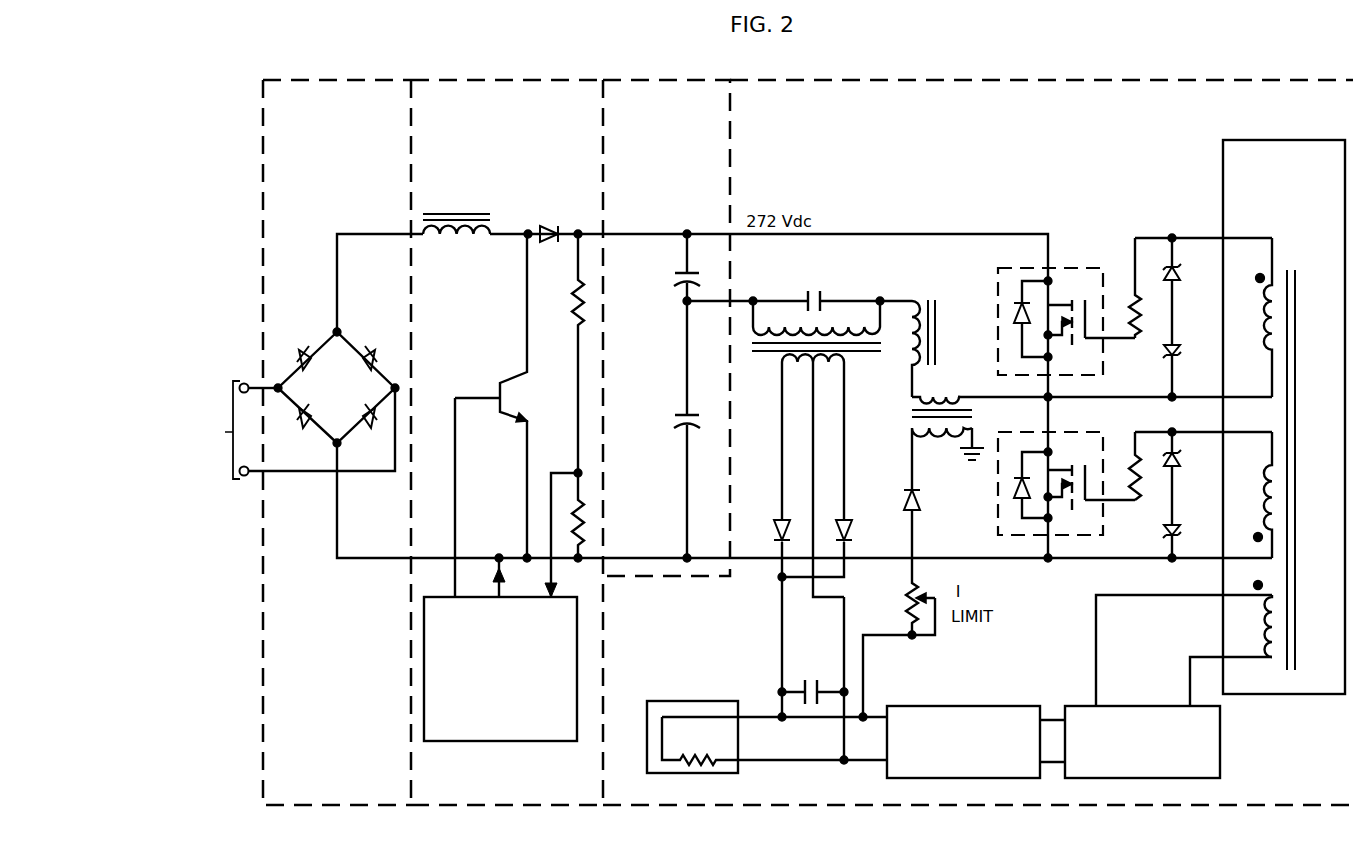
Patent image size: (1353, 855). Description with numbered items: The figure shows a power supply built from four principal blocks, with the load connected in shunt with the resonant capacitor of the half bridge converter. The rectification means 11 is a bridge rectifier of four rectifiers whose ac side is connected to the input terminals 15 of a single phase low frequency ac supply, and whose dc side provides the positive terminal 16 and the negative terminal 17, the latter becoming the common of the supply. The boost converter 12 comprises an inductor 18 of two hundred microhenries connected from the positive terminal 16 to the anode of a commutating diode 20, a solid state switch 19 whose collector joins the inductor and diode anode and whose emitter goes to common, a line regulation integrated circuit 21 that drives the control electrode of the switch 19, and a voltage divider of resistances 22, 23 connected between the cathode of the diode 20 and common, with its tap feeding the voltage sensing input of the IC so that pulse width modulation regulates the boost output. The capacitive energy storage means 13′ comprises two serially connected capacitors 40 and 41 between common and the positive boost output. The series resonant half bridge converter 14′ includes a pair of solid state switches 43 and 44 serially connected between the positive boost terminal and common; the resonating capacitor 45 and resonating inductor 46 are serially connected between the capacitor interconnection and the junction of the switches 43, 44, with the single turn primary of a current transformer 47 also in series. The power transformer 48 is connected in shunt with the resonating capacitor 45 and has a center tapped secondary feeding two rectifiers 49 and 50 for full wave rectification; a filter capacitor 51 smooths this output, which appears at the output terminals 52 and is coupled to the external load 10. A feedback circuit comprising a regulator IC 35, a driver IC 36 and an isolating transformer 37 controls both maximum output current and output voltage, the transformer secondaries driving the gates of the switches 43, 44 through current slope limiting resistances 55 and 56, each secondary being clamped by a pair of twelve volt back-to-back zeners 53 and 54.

The external load 10 is at (628, 760).
The rectification means 11 is at (349, 181).
The boost converter 12 is at (498, 160).
The capacitive energy storage means 13′ is at (681, 185).
The series resonant half bridge converter 14′ is at (1058, 139).
The input terminals 15 is at (248, 458).
The positive terminal 16 is at (335, 247).
The negative terminal 17 is at (335, 534).
The inductor 18 is at (435, 209).
The solid state switch 19 is at (489, 431).
The commutating diode 20 is at (549, 246).
The line regulation integrated circuit 21 is at (498, 766).
The resistance of voltage divider 22 is at (576, 314).
The resistance of voltage divider 23 is at (571, 490).
The regulator IC 35 is at (1021, 684).
The driver IC 36 is at (1248, 758).
The isolating transformer 37 is at (1301, 238).
The capacitor 40 is at (679, 273).
The capacitor 41 is at (678, 403).
The solid state switch 43 is at (1074, 242).
The solid state switch 44 is at (968, 491).
The resonating capacitor 45 is at (857, 274).
The resonating inductor 46 is at (955, 350).
The current transformer 47 is at (910, 411).
The power transformer 48 is at (759, 358).
The rectifier 49 is at (772, 530).
The rectifier 50 is at (850, 534).
The filter capacitor 51 is at (839, 673).
The output terminals 52 is at (818, 758).
The pair of back-to-back zeners 53 is at (1182, 320).
The pair of back-to-back zeners 54 is at (1182, 508).
The current slope limiting resistance 55 is at (1148, 334).
The resistor 56 is at (1148, 498).